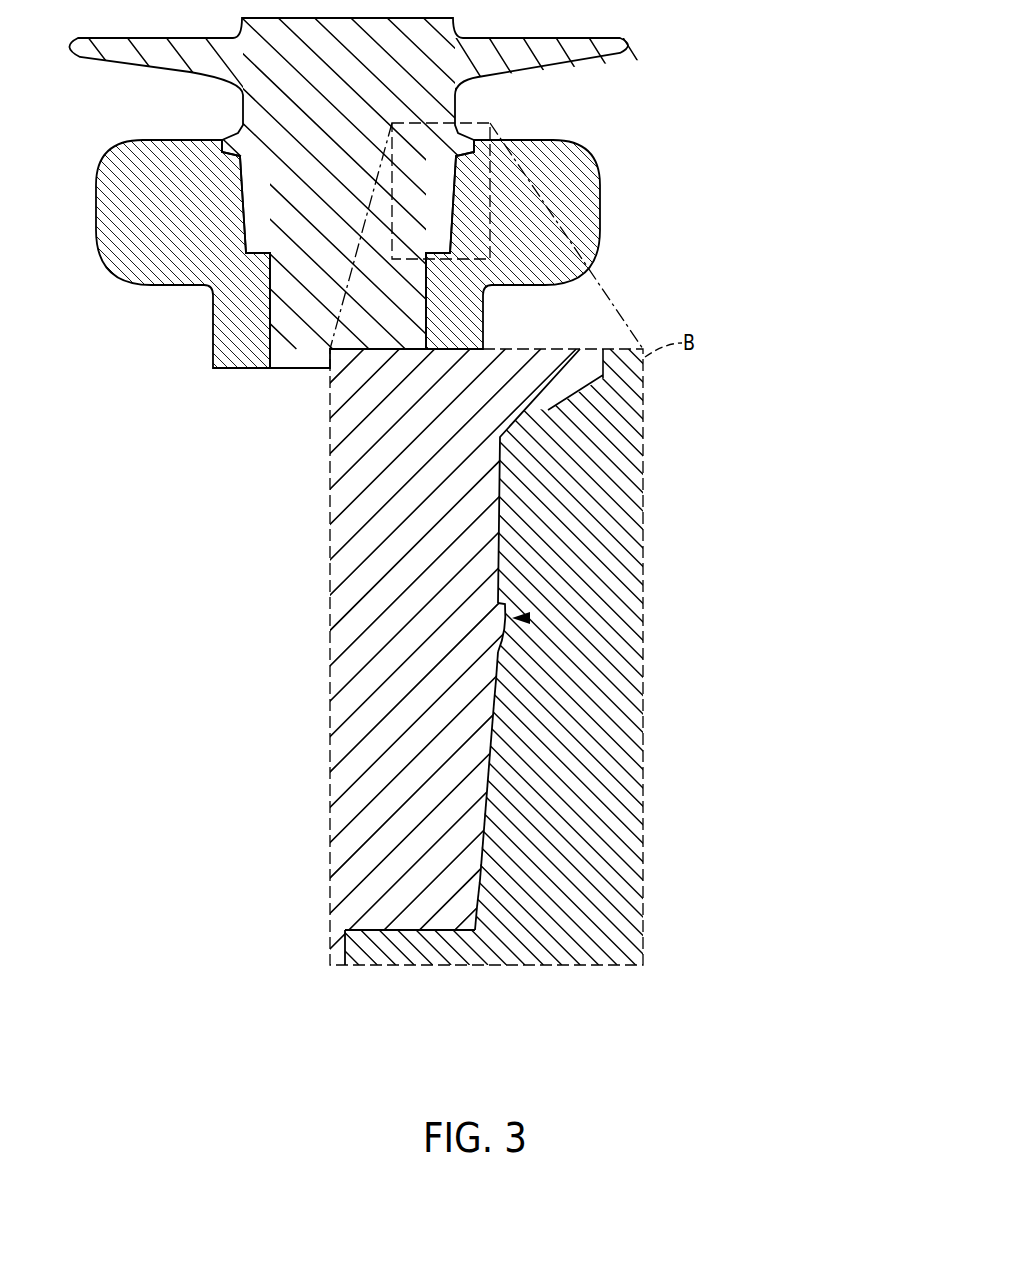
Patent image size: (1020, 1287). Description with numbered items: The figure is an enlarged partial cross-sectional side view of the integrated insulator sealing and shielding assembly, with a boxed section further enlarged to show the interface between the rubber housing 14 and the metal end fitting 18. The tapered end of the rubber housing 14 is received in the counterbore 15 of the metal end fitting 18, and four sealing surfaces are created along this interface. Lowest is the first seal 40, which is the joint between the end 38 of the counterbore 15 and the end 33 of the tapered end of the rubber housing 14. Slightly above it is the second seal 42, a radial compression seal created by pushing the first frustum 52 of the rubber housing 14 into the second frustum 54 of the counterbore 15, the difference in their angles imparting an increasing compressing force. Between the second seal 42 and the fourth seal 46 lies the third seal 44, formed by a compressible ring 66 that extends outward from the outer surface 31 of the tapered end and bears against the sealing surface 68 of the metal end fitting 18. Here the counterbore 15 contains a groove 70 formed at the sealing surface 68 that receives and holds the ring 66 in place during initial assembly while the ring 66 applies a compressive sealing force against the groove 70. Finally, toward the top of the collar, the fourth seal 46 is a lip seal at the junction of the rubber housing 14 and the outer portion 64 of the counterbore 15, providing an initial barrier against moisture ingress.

The rubber housing 14 is at (288, 84).
The metal end fitting 18 is at (599, 192).
The fourth seal 46 is at (567, 390).
The outer portion 64 is at (548, 410).
The groove 70 is at (498, 604).
The third seal 44 is at (526, 617).
The ring 66 is at (485, 628).
The sealing surface 68 is at (495, 650).
The outer surface 31 is at (492, 703).
The counterbore 15 is at (488, 753).
The second seal 42 is at (480, 892).
The first frustum 52 is at (462, 907).
The second frustum 54 is at (487, 925).
The end 33 is at (358, 932).
The end 38 is at (405, 932).
The first seal 40 is at (458, 932).